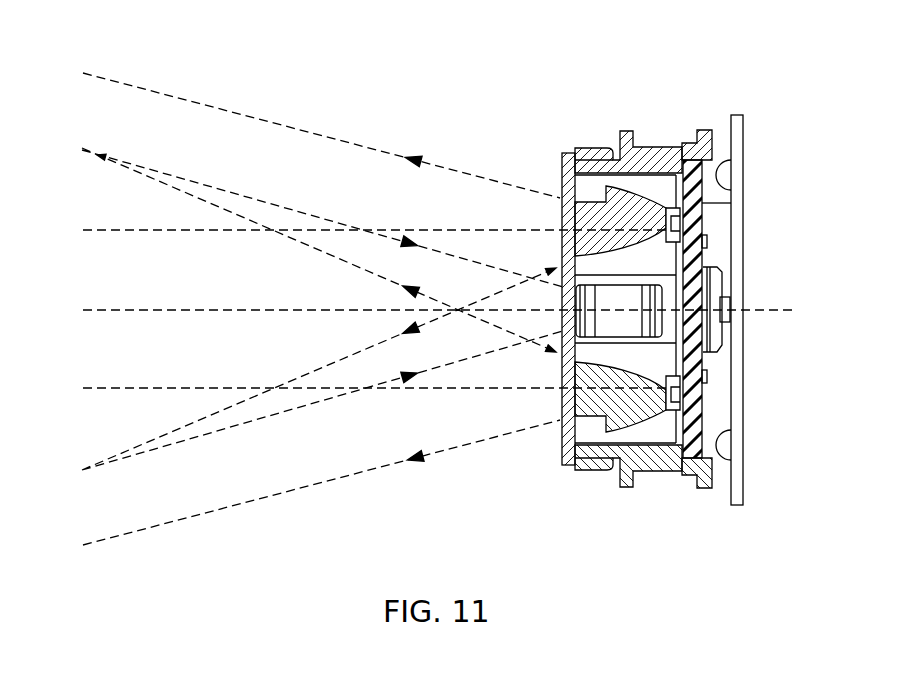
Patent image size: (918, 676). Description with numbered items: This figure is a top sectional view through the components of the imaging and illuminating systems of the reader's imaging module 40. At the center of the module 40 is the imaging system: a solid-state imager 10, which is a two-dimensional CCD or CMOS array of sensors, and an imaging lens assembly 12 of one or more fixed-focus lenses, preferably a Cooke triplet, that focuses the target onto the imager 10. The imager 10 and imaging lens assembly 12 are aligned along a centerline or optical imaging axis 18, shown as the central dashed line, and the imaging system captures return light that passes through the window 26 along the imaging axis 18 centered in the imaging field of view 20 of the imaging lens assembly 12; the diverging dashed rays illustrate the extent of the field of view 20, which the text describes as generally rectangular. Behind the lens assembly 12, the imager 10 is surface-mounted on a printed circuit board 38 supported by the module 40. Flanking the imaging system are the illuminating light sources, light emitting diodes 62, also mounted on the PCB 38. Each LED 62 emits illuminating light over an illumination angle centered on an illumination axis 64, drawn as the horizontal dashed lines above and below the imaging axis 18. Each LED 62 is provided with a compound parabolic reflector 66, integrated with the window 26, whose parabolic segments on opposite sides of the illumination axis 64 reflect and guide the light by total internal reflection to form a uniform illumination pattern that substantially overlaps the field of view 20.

The imaging module 40 is at (721, 64).
The window 26 is at (572, 152).
The compound parabolic reflector 66 is at (617, 207).
The illuminating light emitting diode 62 is at (673, 223).
The solid-state imager 10 is at (633, 326).
The imaging lens assembly 12 is at (665, 343).
The printed circuit board 38 is at (693, 440).
The imaging field of view 20 is at (128, 165).
The illumination axis 64 is at (128, 231).
The optical imaging axis 18 is at (128, 311).